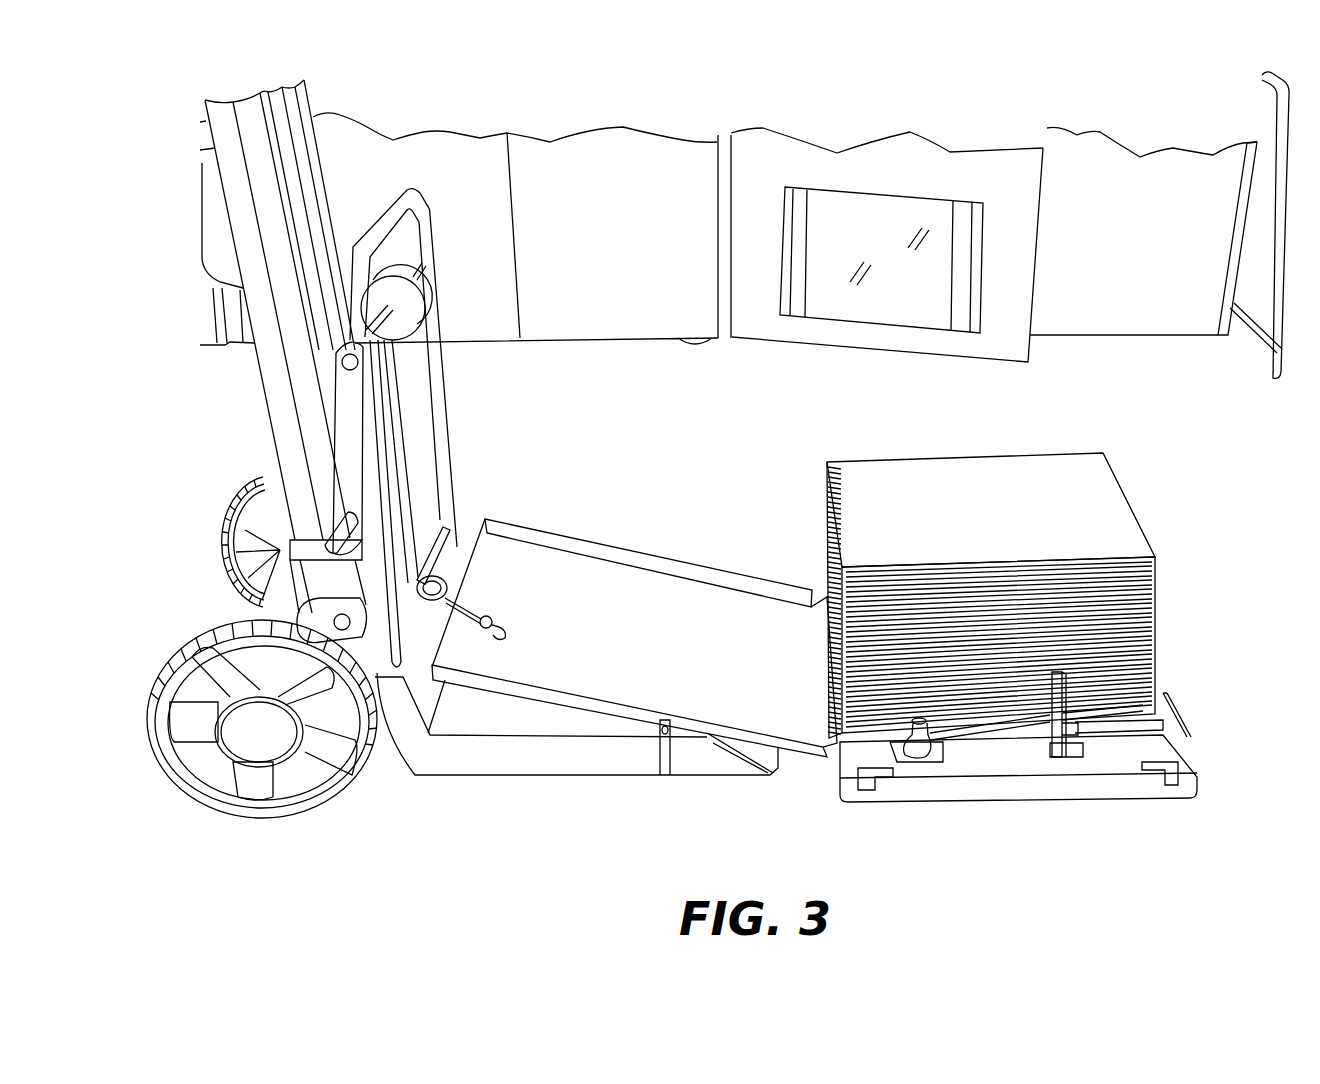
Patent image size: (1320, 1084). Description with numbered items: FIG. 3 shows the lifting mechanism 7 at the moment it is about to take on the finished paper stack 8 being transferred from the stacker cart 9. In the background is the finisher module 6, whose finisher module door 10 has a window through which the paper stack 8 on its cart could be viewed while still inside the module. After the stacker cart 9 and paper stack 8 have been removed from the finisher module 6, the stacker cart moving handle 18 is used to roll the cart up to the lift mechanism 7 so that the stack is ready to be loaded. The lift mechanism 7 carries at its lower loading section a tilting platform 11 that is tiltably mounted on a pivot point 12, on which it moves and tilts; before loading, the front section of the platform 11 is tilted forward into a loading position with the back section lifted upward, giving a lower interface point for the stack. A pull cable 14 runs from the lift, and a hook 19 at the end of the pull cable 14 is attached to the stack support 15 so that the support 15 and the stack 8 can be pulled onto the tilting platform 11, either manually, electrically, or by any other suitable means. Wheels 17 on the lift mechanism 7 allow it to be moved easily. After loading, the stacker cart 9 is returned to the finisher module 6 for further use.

The finisher module 6 is at (1117, 318).
The lifting mechanism 7 is at (522, 444).
The paper stack 8 is at (977, 487).
The stacker cart 9 is at (1007, 762).
The finisher module door 10 is at (845, 335).
The tilting platform 11 is at (646, 590).
The pivot point 12 is at (657, 737).
The pull cable 14 is at (393, 428).
The stack support 15 is at (1075, 752).
The wheels 17 is at (243, 490).
The stacker cart moving handle 18 is at (1282, 310).
The hook 19 is at (497, 613).